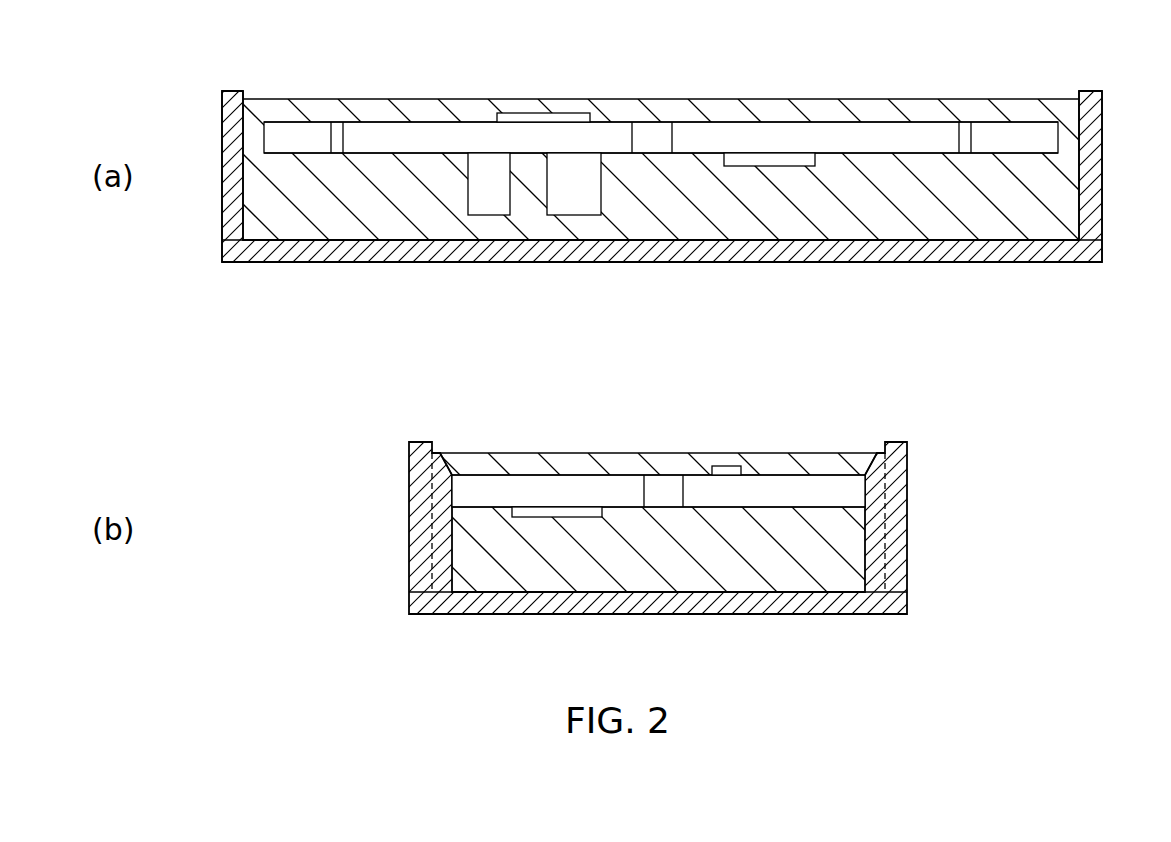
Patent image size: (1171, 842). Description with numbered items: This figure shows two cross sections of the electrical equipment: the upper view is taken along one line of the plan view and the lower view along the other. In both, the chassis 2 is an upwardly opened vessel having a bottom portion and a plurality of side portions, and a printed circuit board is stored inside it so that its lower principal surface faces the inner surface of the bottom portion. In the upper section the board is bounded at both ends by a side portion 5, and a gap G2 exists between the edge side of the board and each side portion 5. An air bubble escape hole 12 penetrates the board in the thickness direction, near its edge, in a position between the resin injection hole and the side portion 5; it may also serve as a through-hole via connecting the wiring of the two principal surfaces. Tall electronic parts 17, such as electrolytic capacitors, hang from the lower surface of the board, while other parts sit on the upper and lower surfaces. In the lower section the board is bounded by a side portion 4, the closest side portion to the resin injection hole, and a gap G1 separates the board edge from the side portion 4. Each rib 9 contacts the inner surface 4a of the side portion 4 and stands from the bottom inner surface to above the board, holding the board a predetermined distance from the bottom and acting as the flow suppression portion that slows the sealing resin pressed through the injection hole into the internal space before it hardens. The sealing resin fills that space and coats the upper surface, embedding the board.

The chassis 2 is at (999, 263).
The side portion 4 is at (412, 505).
The inner surface of the side portion 4a is at (432, 558).
The side portion 5 is at (236, 133).
The rib 9 is at (443, 580).
The air bubble escape hole 12 is at (338, 128).
The electronic part 17 is at (480, 190).
The gap G1 is at (432, 462).
The gap G2 is at (258, 115).